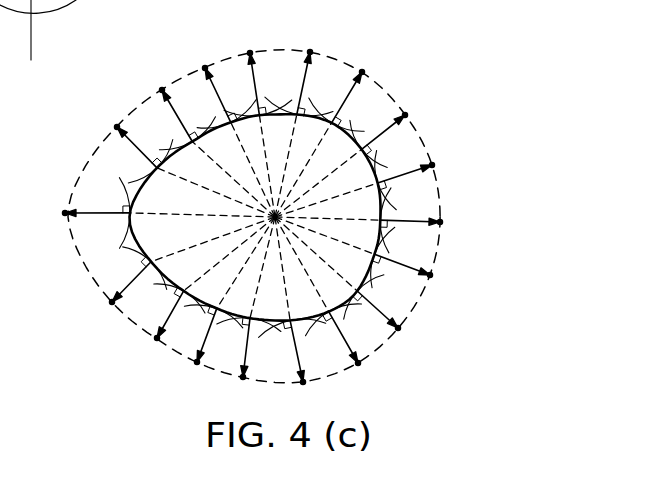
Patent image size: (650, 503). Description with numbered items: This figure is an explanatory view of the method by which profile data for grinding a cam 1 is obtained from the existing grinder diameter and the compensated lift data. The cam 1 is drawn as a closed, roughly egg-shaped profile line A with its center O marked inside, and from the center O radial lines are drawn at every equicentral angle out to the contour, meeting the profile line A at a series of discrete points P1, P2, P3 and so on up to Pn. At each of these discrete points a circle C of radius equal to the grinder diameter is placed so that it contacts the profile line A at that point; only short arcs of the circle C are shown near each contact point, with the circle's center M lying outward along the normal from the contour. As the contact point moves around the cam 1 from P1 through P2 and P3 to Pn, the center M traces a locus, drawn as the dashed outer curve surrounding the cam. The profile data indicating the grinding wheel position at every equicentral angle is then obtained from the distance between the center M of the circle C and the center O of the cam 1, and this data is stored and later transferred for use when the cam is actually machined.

The cam 1 is at (314, 160).
The circle C is at (306, 111).
The profile line A is at (301, 198).
The center of the circle M is at (383, 88).
The center of the cam O is at (251, 203).
The discrete point P1 is at (380, 231).
The discrete point P2 is at (380, 187).
The discrete point P3 is at (380, 151).
The discrete point Pn is at (378, 289).